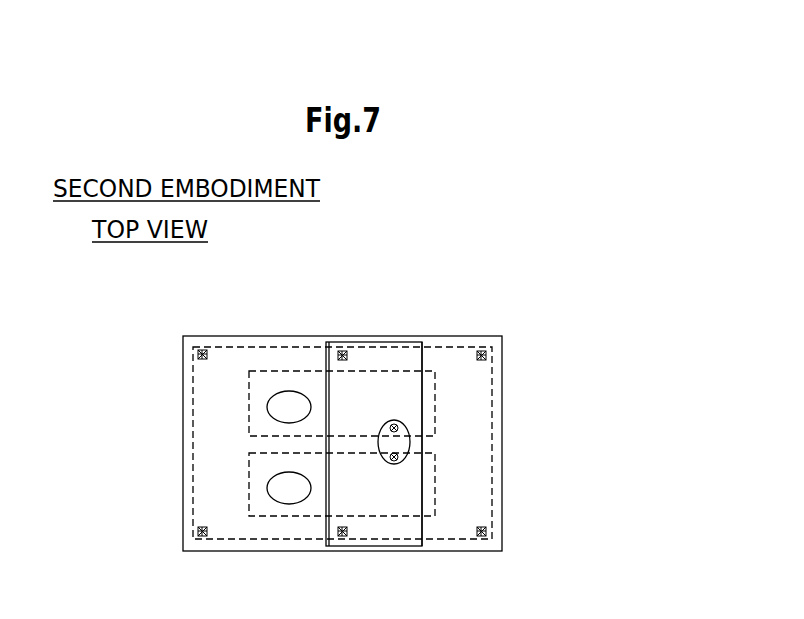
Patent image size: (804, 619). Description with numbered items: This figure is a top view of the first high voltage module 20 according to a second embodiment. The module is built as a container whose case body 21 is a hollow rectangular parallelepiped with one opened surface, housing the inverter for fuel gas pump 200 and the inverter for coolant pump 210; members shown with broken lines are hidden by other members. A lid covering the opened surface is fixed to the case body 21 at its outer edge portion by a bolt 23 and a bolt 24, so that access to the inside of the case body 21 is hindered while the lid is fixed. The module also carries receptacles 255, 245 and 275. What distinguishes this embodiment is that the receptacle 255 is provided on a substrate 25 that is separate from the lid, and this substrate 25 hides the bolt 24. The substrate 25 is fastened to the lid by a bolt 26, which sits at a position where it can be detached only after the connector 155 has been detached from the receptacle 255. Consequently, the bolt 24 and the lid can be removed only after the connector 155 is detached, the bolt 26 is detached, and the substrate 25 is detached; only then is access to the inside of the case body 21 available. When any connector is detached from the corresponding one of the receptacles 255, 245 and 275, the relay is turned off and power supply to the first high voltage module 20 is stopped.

The first high voltage module 20 is at (606, 292).
The case body 21 is at (503, 357).
The bolt 23 is at (204, 349).
The bolt 24 is at (343, 350).
The substrate 25 is at (421, 388).
The bolt 26 is at (399, 421).
The connector 155 is at (408, 436).
The inverter for fuel gas pump 200 is at (284, 527).
The inverter for coolant pump 210 is at (289, 362).
The receptacle 245 is at (276, 473).
The receptacle 255 is at (402, 424).
The receptacle 275 is at (280, 392).